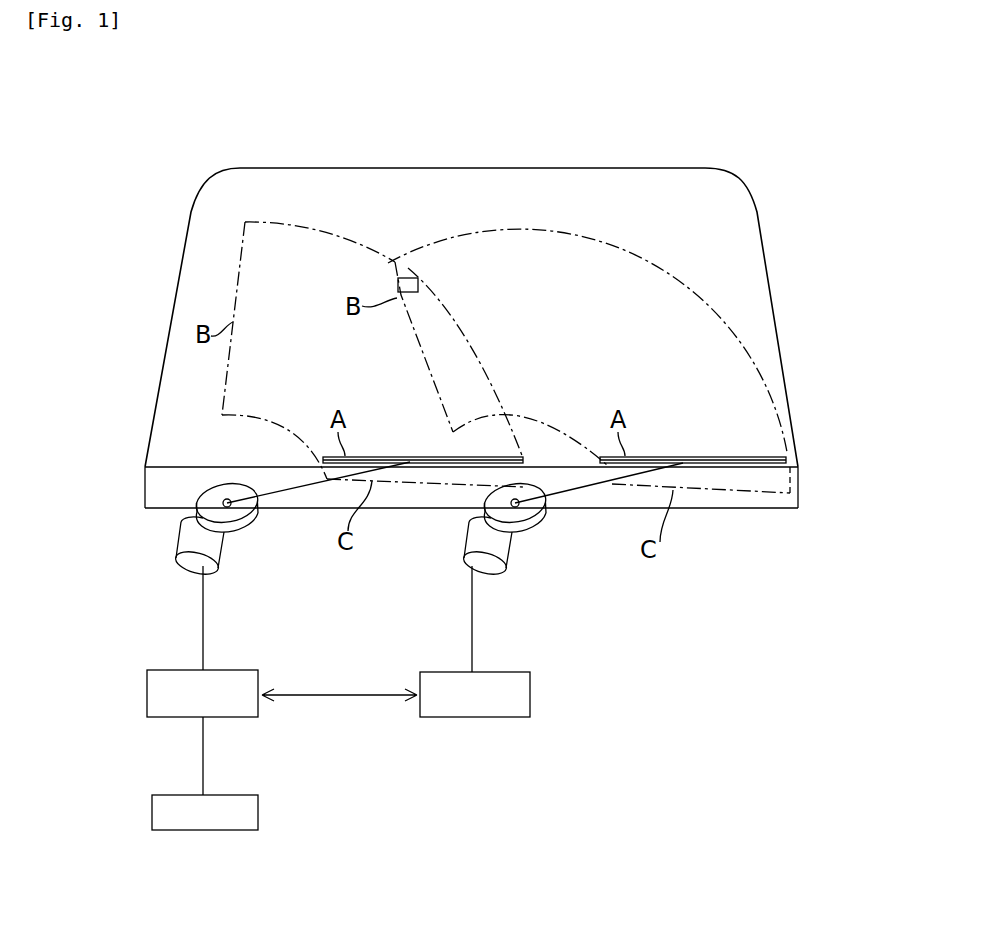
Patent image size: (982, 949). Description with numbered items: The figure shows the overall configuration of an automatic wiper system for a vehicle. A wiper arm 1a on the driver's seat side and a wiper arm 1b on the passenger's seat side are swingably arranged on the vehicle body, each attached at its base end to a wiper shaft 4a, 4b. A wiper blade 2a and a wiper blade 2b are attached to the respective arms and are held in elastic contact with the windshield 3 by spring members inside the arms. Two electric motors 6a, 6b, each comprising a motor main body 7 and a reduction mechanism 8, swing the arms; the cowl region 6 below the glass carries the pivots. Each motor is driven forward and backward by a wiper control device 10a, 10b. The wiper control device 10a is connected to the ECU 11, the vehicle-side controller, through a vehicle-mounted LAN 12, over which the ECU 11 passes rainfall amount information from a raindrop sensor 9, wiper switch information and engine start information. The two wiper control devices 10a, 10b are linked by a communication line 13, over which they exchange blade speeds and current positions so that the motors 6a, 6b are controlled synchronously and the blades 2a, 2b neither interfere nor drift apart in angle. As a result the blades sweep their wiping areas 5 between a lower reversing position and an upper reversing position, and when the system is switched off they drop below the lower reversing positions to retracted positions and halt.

The wiper arm 1a is at (293, 488).
The wiper arm 1b is at (587, 487).
The wiper blade 2a is at (427, 464).
The wiper blade 2b is at (710, 464).
The windshield 3 is at (753, 258).
The wiper shaft 4a is at (237, 530).
The wiper shaft 4b is at (525, 532).
The wiping area 5 is at (347, 238).
The cowl 6 is at (792, 500).
The electric motor 6a is at (170, 546).
The electric motor 6b is at (458, 546).
The motor main body 7 is at (193, 568).
The reduction mechanism 8 is at (247, 528).
The raindrop sensor 9 is at (418, 280).
The wiper control device 10a is at (237, 718).
The wiper control device 10b is at (508, 718).
The ECU 11 is at (237, 830).
The vehicle-mounted LAN 12 is at (205, 778).
The communication line 13 is at (337, 693).